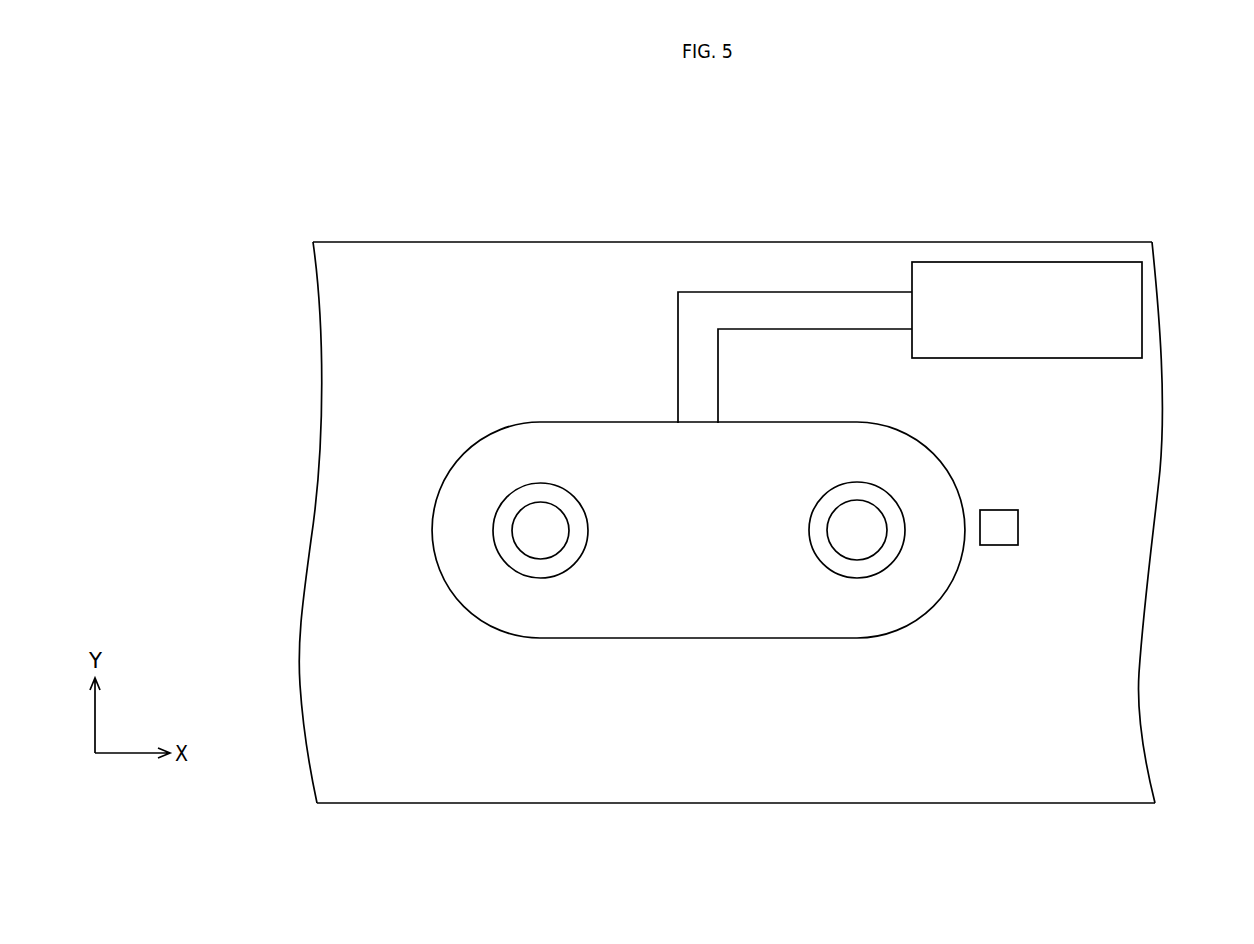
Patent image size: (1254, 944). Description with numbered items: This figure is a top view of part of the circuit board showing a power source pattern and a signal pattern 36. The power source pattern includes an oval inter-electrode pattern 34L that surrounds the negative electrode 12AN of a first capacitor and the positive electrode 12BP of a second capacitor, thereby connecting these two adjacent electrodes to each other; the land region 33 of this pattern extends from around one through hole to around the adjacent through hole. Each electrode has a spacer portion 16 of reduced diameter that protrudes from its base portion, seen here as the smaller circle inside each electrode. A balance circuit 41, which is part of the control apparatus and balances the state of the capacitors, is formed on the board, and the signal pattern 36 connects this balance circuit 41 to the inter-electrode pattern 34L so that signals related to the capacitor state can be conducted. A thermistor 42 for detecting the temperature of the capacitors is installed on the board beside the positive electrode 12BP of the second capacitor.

The land 33 is at (629, 458).
The inter-electrode pattern 34L is at (698, 530).
The signal pattern 36 is at (777, 308).
The balance circuit 41 is at (1017, 290).
The thermistor 42 is at (997, 523).
The negative electrode 12AN is at (509, 568).
The positive electrode 12BP is at (840, 574).
The spacer portion 16 is at (536, 559).